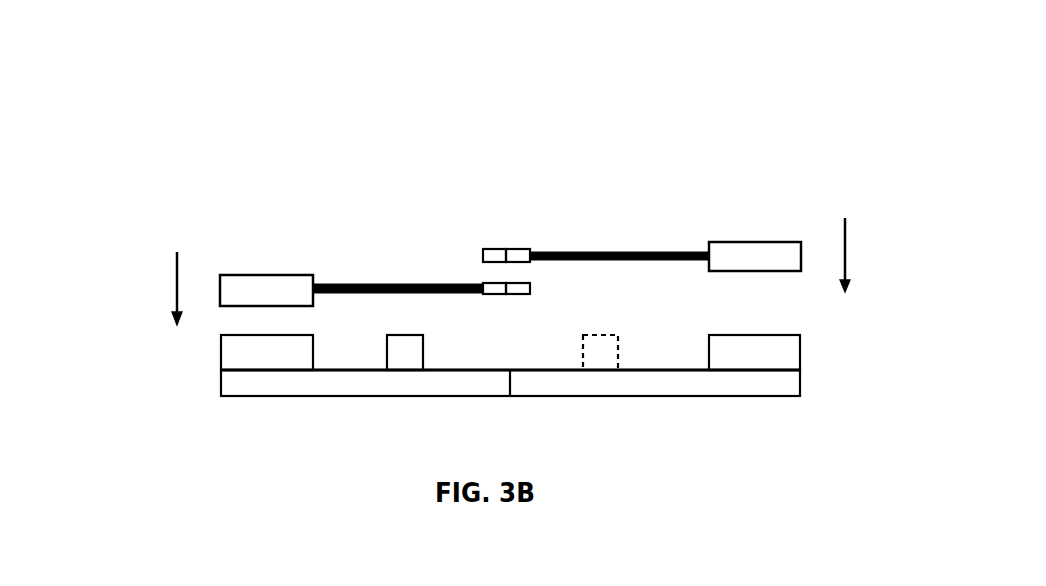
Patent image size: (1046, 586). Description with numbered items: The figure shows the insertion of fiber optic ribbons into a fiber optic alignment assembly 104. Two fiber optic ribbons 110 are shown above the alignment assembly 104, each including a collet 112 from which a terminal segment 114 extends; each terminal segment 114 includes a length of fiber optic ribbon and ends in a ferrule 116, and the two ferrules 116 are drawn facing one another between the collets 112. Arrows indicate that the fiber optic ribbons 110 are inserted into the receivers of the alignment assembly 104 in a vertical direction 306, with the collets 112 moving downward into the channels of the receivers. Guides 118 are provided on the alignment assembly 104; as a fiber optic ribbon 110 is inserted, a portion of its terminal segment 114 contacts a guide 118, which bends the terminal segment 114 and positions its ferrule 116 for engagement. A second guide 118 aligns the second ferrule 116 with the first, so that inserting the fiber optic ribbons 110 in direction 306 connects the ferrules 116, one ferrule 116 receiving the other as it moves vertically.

The fiber optic alignment assembly 104 is at (232, 90).
The fiber optic ribbon 110 is at (506, 247).
The collet 112 is at (263, 285).
The terminal segment 114 is at (399, 265).
The ferrule 116 is at (505, 248).
The guide 118 is at (405, 360).
The direction 306 is at (172, 283).